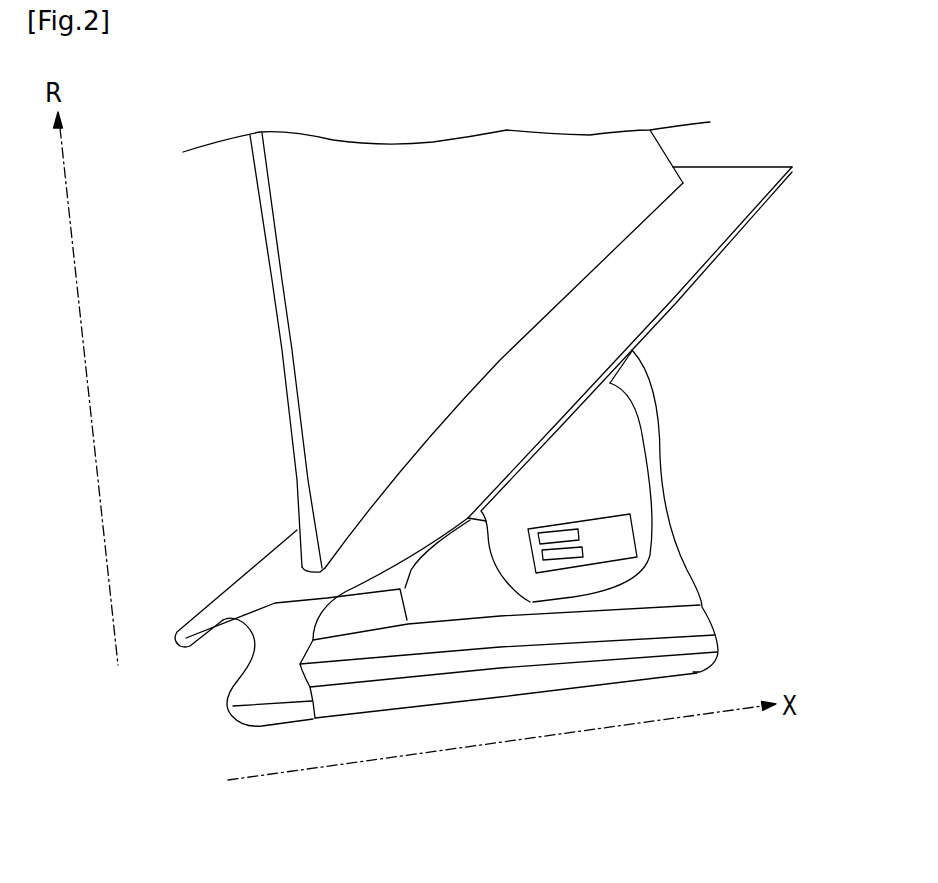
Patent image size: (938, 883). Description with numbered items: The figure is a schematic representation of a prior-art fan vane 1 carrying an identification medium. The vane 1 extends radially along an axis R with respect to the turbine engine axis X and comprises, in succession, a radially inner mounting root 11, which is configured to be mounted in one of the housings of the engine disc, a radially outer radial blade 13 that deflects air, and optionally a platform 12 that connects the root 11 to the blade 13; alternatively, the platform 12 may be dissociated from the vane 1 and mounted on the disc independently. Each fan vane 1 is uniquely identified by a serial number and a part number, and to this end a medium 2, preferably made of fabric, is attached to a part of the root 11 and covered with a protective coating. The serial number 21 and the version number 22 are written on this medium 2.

The vane 1 is at (810, 436).
The mounting root 11 is at (689, 590).
The platform 12 is at (737, 183).
The blade 13 is at (580, 175).
The medium 2 is at (613, 513).
The serial number 21 is at (572, 524).
The version number 22 is at (583, 550).